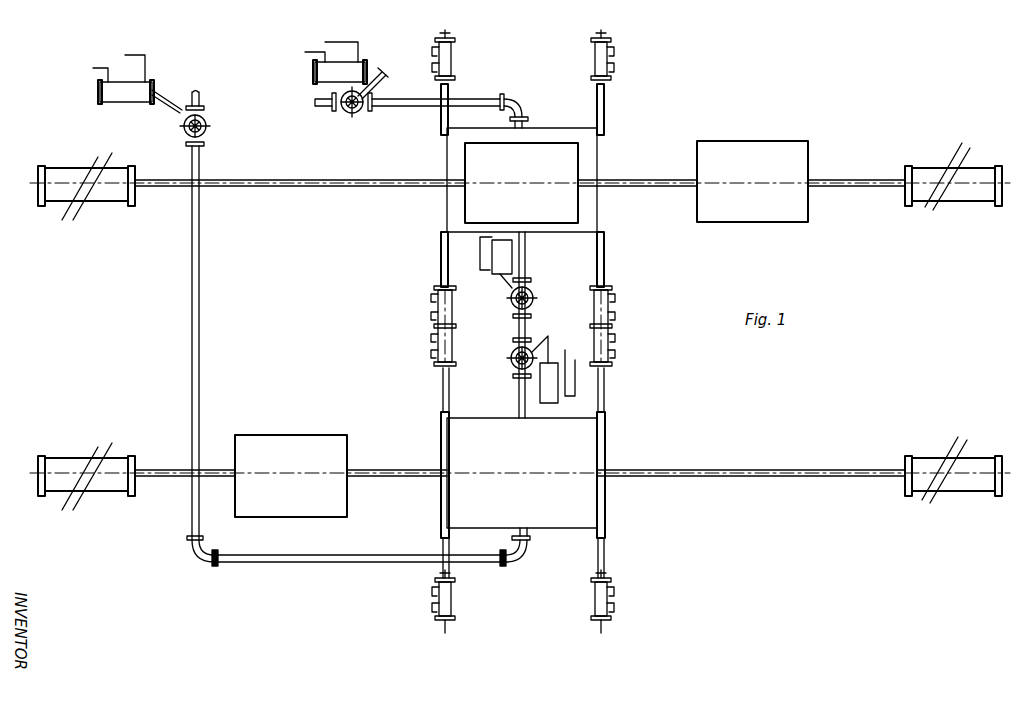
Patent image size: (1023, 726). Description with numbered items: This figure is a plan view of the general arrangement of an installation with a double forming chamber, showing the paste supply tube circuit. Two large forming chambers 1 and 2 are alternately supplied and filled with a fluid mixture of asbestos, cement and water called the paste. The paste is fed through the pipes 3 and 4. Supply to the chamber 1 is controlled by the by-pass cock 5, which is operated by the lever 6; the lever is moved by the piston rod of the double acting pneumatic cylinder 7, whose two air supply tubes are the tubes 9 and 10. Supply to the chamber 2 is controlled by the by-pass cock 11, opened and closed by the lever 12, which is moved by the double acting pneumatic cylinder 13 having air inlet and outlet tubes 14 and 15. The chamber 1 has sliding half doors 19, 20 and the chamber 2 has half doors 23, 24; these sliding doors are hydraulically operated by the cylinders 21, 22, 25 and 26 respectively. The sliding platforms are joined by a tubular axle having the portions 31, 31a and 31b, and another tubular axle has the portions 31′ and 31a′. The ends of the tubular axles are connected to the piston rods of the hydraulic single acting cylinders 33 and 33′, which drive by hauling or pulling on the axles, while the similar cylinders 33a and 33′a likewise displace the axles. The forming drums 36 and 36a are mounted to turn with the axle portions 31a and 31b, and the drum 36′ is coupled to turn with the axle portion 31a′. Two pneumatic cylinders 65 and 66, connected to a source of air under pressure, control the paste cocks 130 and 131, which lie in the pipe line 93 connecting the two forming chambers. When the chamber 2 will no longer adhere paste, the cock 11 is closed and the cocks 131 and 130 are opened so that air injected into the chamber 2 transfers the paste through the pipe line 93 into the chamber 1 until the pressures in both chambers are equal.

The forming chamber 1 is at (587, 163).
The forming chamber 2 is at (582, 440).
The pipe 3 is at (322, 106).
The pipe 4 is at (190, 103).
The by-pass cock 5 is at (352, 114).
The lever 6 is at (385, 79).
The double acting pneumatic cylinder 7 is at (320, 72).
The air supply tube 9 is at (360, 49).
The air supply tube 10 is at (306, 53).
The by-pass cock 11 is at (208, 123).
The lever 12 is at (166, 100).
The double acting pneumatic cylinder 13 is at (122, 93).
The air inlet and outlet tube 14 is at (144, 57).
The air inlet and outlet tube 15 is at (105, 67).
The sliding half door 19 is at (443, 122).
The sliding half door 20 is at (440, 256).
The hydraulic cylinder 21 is at (440, 314).
The hydraulic cylinder 22 is at (478, 58).
The half door 23 is at (445, 443).
The half door 24 is at (445, 508).
The hydraulic cylinder 25 is at (440, 356).
The hydraulic cylinder 26 is at (438, 607).
The tubular axle portion 31 is at (157, 178).
The tubular axle portion 31a is at (370, 180).
The tubular axle portion 31b is at (653, 178).
The tubular axle portion 31′ is at (165, 468).
The tubular axle portion 31a′ is at (225, 482).
The hydraulic single acting cylinder 33 is at (57, 176).
The hydraulic single action cylinder 33a is at (922, 173).
The hydraulic single acting cylinder 33′ is at (56, 470).
The hydraulic single action cylinder 33′a is at (923, 462).
The forming drum 36 is at (532, 158).
The forming drum 36a is at (745, 160).
The forming drum 36′ is at (283, 458).
The pneumatic cylinder 65 is at (500, 264).
The pneumatic cylinder 66 is at (548, 390).
The pipe line 93 is at (528, 335).
The paste cock 130 is at (512, 305).
The paste cock 131 is at (512, 361).